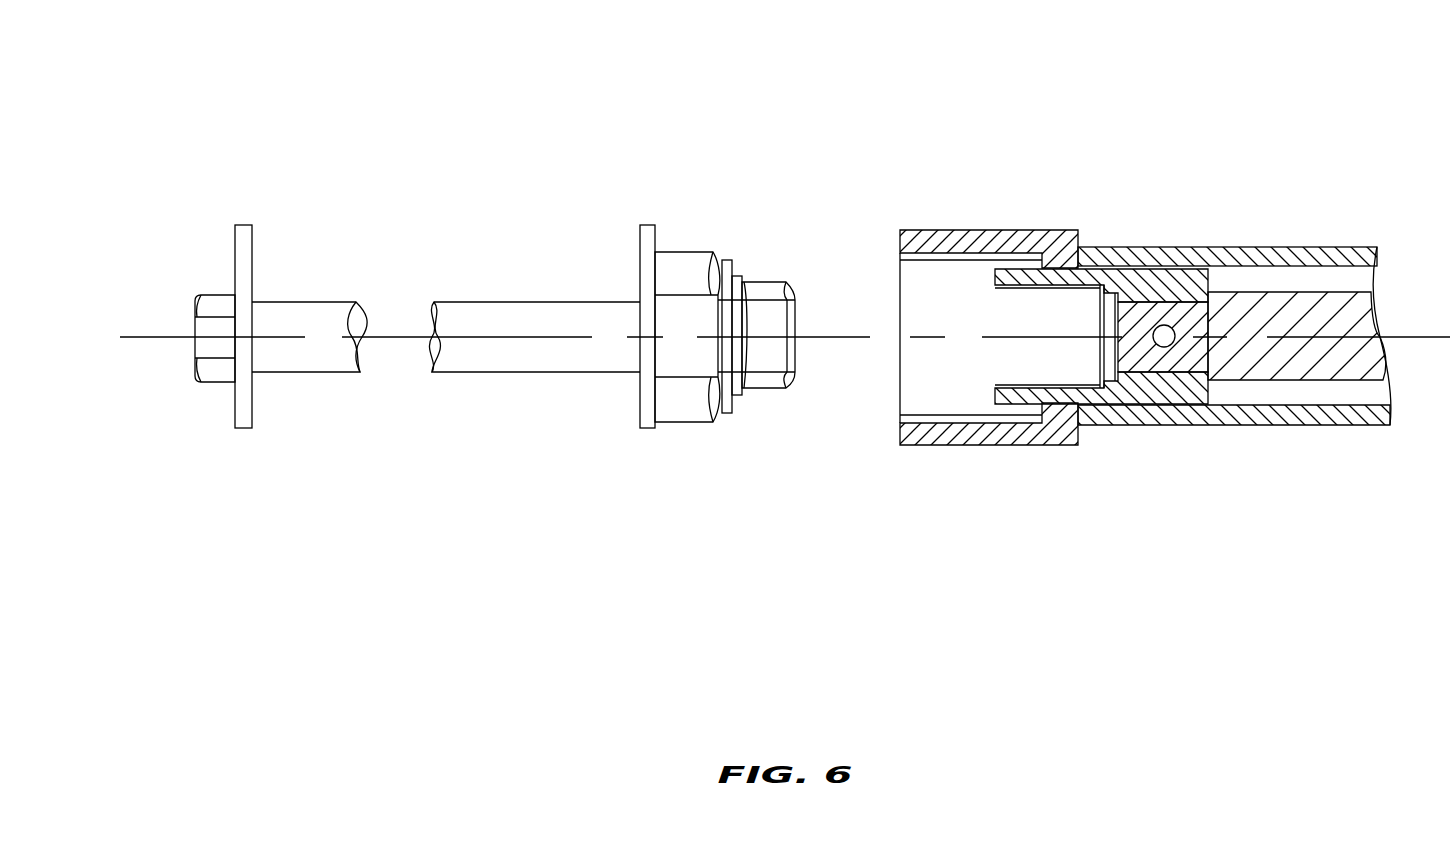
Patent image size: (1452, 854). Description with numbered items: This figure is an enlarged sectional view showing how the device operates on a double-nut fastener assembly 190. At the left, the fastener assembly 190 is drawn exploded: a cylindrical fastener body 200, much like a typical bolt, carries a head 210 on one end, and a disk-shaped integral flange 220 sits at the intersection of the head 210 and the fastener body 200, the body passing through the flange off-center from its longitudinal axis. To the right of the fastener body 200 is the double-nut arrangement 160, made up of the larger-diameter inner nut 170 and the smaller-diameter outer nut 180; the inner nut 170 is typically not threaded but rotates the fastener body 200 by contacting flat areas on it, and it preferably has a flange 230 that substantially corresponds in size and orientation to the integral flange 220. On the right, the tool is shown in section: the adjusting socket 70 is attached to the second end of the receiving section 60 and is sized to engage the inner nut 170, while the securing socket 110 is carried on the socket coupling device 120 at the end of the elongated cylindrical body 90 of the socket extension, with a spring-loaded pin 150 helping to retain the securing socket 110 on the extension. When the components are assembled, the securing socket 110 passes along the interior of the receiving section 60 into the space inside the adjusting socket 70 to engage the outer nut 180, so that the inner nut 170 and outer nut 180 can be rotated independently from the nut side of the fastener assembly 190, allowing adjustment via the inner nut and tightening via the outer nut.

The receiving section 60 is at (1262, 253).
The adjusting socket 70 is at (977, 235).
The elongated cylindrical body 90 is at (1338, 367).
The securing socket 110 is at (1137, 397).
The socket coupling device 120 is at (1173, 355).
The spring-loaded pin 150 is at (1164, 325).
The double-nut arrangement 160 is at (740, 217).
The inner nut 170 is at (690, 412).
The outer nut 180 is at (763, 383).
The fastener assembly 190 is at (418, 205).
The fastener body 200 is at (455, 362).
The head 210 is at (215, 302).
The integral flange 220 is at (243, 427).
The flange 230 is at (645, 230).